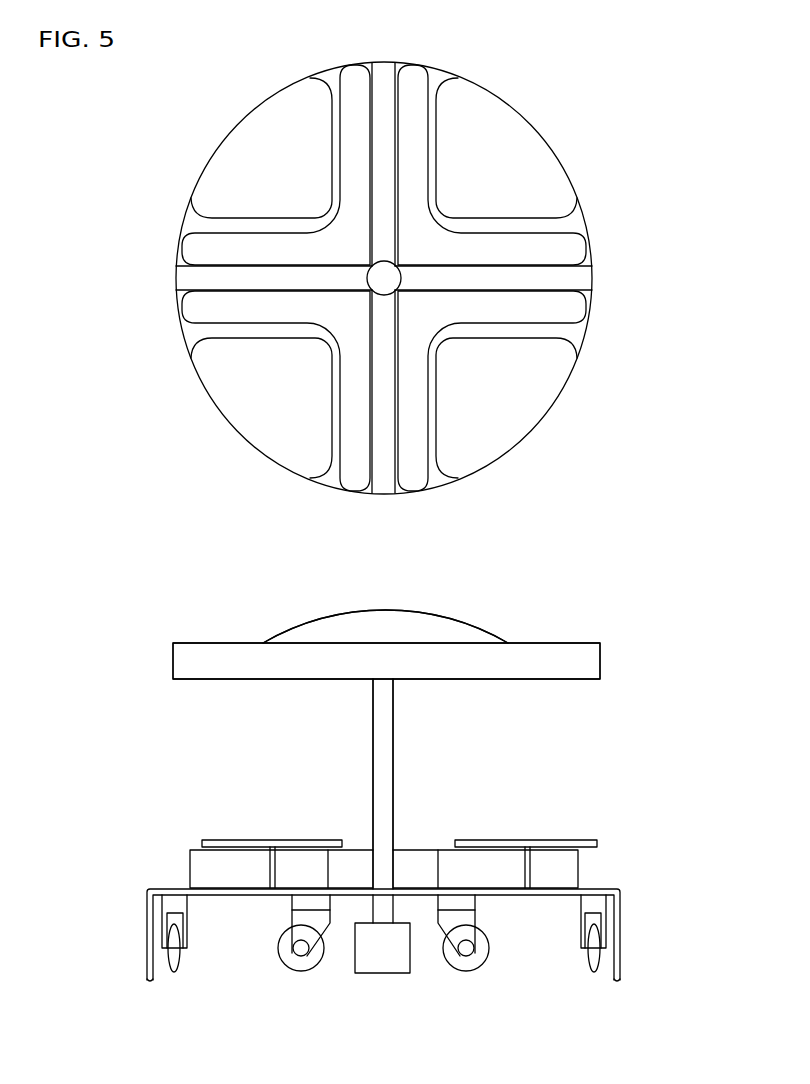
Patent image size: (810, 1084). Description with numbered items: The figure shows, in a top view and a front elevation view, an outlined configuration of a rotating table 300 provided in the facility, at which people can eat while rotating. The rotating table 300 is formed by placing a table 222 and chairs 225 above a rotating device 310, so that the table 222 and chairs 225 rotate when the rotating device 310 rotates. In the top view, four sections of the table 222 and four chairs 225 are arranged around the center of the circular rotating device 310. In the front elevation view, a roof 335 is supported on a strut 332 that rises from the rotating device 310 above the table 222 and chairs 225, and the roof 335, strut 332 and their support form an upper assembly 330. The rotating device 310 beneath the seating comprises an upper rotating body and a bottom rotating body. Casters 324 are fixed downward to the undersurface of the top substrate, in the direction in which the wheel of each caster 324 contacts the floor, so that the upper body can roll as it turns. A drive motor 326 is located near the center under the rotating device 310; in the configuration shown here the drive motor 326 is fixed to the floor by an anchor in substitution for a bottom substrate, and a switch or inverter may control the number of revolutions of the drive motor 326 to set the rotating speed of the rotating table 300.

The rotating table 300 is at (765, 124).
The table 222 is at (228, 162).
The chair 225 is at (200, 244).
The roof 335 is at (540, 660).
The strut 332 is at (383, 745).
The upper cover unit 330 is at (149, 612).
The rotating device 310 is at (97, 893).
The caster 324 is at (177, 958).
The drive motor 326 is at (387, 962).